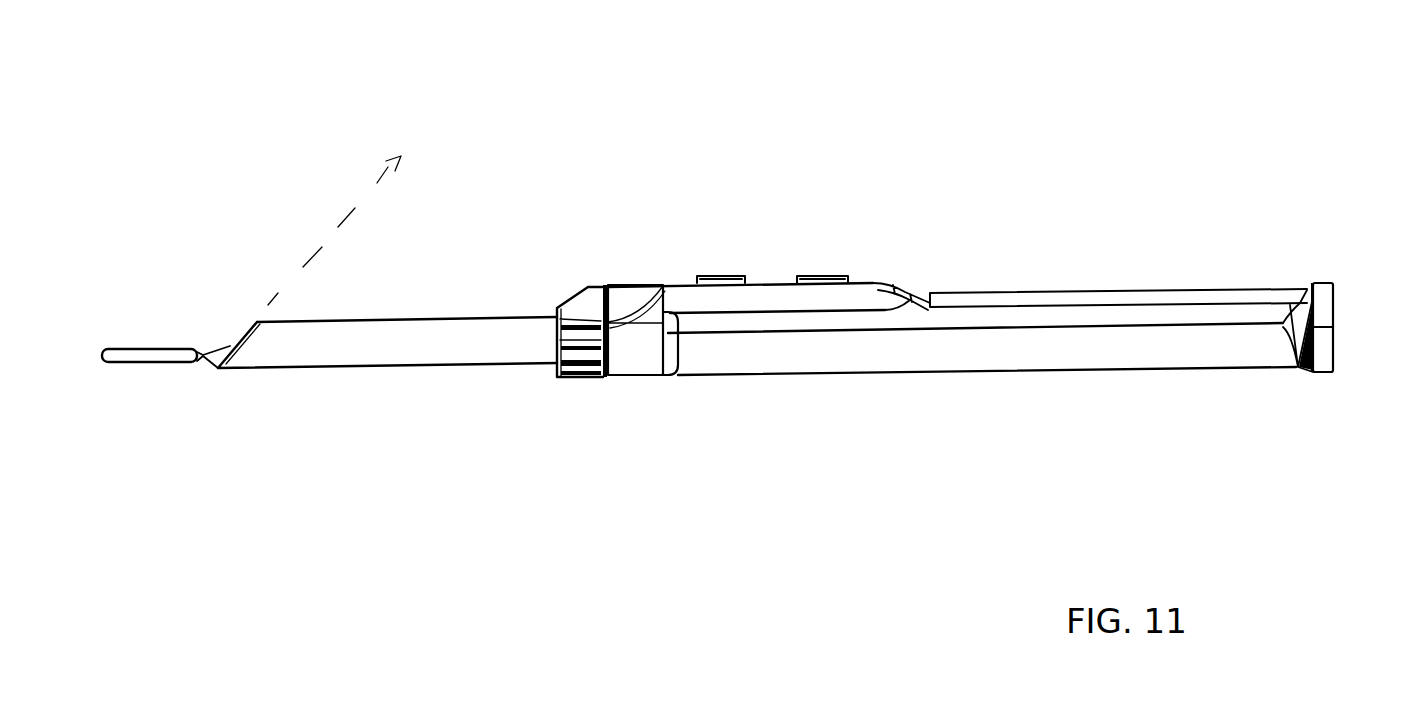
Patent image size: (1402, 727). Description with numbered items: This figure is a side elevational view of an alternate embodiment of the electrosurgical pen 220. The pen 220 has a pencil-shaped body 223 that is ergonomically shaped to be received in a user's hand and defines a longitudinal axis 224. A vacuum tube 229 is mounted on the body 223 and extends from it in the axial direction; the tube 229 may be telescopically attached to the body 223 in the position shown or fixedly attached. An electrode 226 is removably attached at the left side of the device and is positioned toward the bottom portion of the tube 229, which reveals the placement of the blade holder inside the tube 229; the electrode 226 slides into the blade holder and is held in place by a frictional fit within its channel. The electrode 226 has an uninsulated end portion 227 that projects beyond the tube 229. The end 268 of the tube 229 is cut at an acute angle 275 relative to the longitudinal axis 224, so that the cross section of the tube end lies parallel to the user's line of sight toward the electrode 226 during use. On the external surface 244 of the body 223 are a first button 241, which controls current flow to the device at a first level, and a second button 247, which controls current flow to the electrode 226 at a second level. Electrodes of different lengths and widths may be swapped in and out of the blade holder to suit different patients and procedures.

The pen 220 is at (1036, 114).
The body 223 is at (1083, 322).
The longitudinal axis 224 is at (1365, 328).
The electrode 226 is at (153, 277).
The uninsulated end portion 227 is at (133, 366).
The vacuum tube 229 is at (434, 370).
The first button 241 is at (712, 272).
The external surface 244 is at (768, 278).
The second button 247 is at (839, 272).
The end 268 is at (243, 336).
The acute angle 275 is at (332, 320).